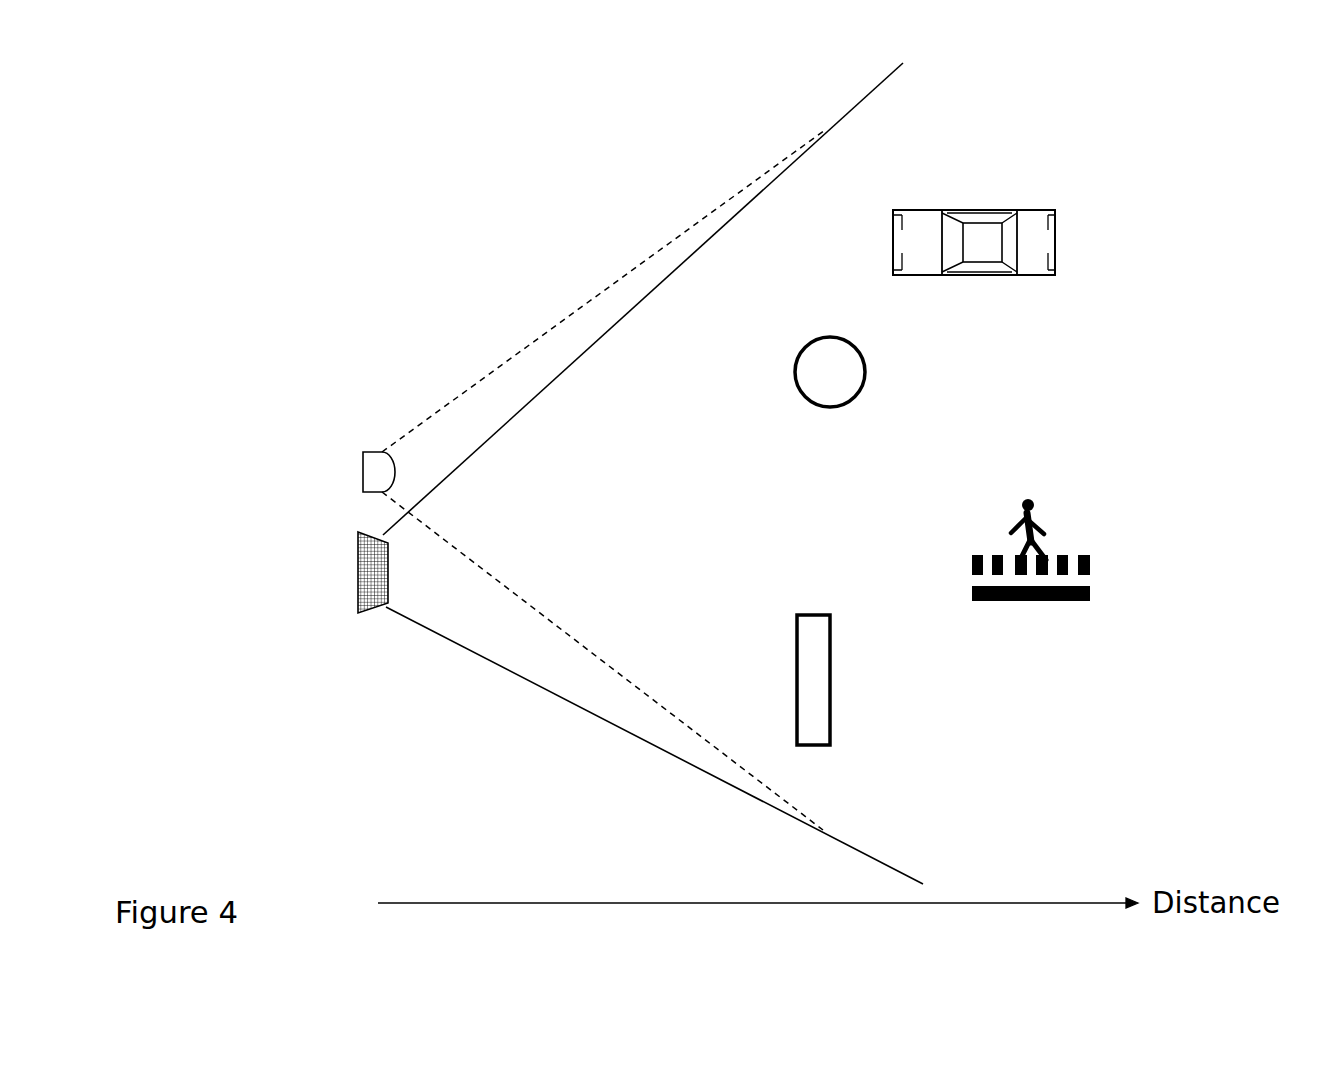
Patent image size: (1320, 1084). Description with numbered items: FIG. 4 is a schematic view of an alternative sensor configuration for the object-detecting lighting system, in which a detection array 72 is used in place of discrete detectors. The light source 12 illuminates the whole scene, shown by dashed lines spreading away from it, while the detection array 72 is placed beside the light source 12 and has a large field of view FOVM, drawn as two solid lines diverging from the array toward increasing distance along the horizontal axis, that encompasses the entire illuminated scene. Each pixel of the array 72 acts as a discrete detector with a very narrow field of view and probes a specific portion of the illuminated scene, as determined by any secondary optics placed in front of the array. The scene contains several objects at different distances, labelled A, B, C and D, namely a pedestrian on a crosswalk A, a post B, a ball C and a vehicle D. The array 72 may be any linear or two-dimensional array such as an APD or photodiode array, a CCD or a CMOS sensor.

The light source 12 is at (363, 470).
The detection array 72 is at (357, 577).
The field of view of the detection array FOVM is at (573, 707).
The pedestrian on crosswalk A is at (1046, 535).
The sign post object B is at (832, 676).
The ball object C is at (867, 376).
The vehicle object D is at (1055, 247).